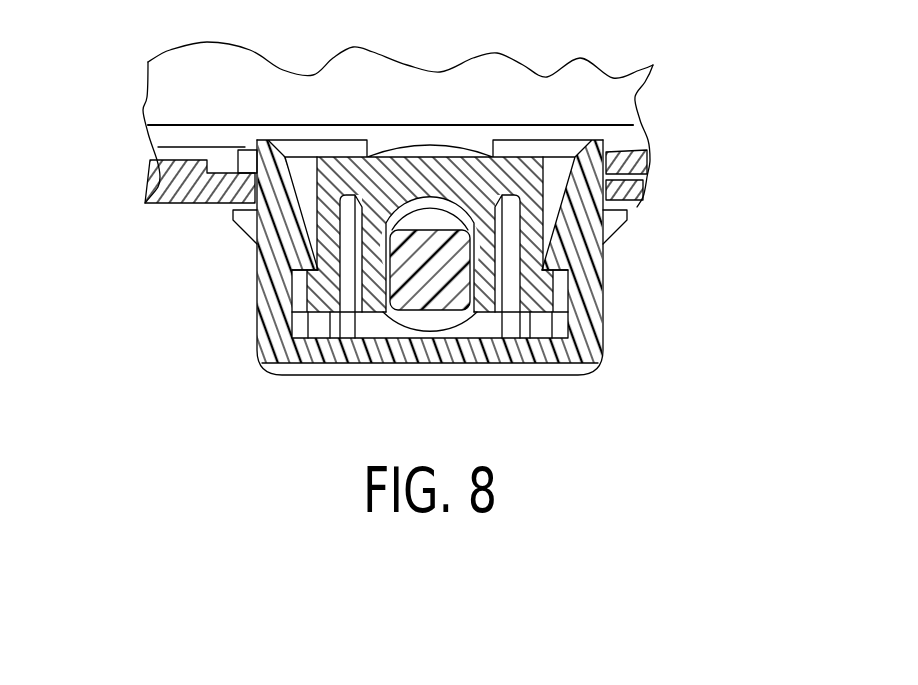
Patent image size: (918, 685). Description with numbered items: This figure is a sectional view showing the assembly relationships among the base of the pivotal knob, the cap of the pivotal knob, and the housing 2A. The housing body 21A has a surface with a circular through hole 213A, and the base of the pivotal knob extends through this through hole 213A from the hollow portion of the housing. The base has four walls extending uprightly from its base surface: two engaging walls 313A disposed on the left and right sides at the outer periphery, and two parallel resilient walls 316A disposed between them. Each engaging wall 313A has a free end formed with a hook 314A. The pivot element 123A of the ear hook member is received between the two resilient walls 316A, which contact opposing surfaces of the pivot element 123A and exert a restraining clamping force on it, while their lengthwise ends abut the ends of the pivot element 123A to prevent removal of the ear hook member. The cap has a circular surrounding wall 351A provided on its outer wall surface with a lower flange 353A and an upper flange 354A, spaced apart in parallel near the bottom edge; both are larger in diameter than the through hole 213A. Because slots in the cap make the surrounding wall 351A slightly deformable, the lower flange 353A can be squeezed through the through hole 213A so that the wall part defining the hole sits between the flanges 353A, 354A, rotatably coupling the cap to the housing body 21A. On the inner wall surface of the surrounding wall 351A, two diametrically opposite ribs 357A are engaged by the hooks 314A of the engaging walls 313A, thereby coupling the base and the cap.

The housing 2A is at (632, 62).
The housing body 21A is at (613, 107).
The circular through hole 213A is at (250, 174).
The lower flange 353A is at (250, 157).
The surrounding wall 351A is at (595, 350).
The upper flange 354A is at (247, 228).
The engaging wall 313A is at (528, 172).
The rib 357A is at (307, 268).
The hook 314A is at (307, 298).
The resilient wall 316A is at (368, 355).
The pivot element 123A is at (430, 303).